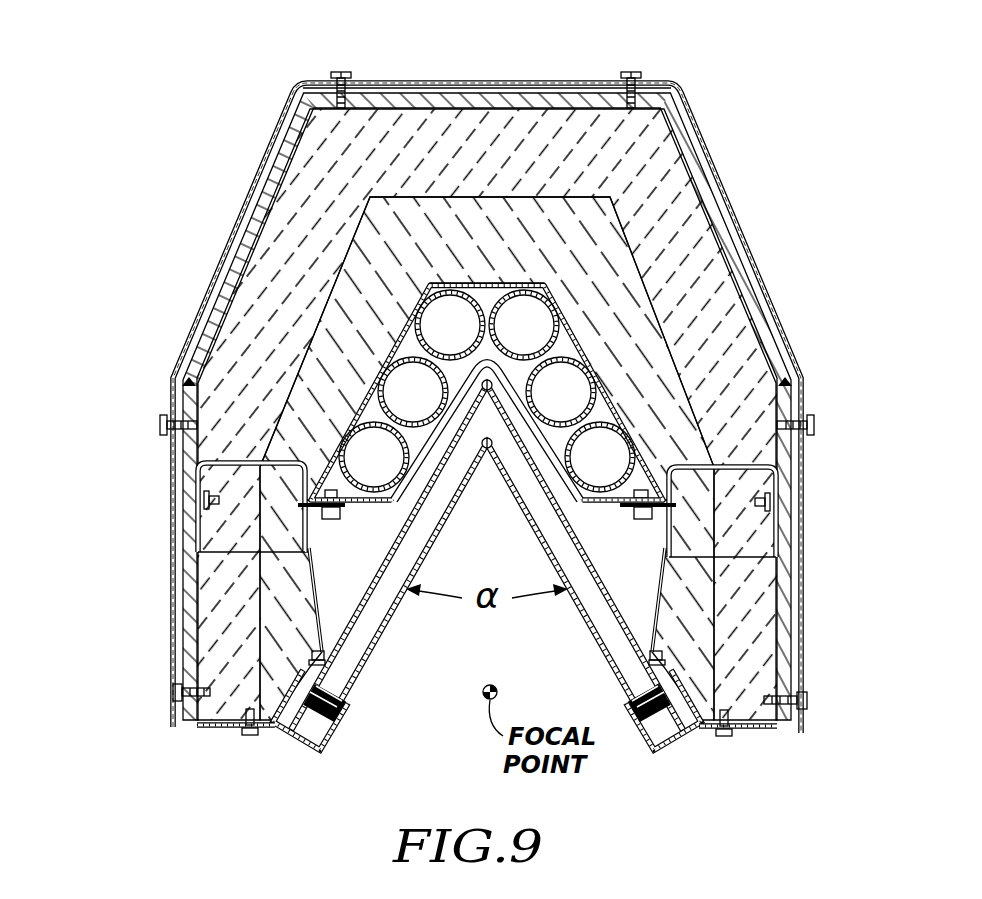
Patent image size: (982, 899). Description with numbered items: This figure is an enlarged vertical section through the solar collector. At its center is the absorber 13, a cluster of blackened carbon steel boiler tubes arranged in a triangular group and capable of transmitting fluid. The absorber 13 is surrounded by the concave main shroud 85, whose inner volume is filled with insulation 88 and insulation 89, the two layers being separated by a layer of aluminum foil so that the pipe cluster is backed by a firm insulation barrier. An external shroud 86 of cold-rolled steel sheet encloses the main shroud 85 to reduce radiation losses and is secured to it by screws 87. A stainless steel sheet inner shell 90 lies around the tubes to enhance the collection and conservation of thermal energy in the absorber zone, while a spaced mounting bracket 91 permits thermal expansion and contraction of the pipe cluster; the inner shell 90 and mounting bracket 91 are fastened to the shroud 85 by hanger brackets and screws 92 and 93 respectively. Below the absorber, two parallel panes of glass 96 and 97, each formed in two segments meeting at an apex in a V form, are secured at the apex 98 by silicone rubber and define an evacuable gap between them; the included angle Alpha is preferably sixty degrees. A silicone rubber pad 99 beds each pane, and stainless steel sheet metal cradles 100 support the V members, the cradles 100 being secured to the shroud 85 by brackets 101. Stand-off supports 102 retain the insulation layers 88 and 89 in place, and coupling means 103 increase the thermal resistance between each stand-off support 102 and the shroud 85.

The absorber 13 is at (560, 327).
The shroud 85 is at (471, 93).
The external shroud 86 is at (264, 176).
The screws 87 is at (341, 72).
The insulation 88 is at (474, 163).
The insulation 89 is at (580, 253).
The inner shell 90 is at (402, 336).
The mounting bracket 91 is at (608, 508).
The hanger brackets and screws 92 is at (221, 462).
The hanger brackets and screws 93 is at (212, 505).
The pane of glass 96 is at (390, 617).
The pane of glass 97 is at (395, 544).
The silicone rubber securement 98 is at (485, 392).
The silicone rubber pad 99 is at (334, 694).
The cradles 100 is at (325, 750).
The brackets 101 is at (217, 729).
The stand-off support 102 is at (320, 588).
The coupling means 103 is at (306, 648).